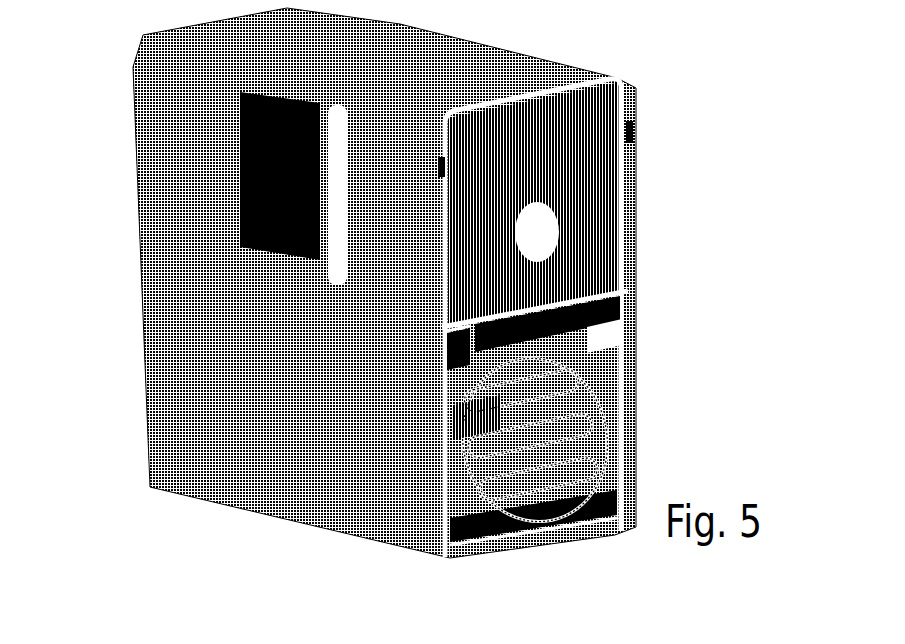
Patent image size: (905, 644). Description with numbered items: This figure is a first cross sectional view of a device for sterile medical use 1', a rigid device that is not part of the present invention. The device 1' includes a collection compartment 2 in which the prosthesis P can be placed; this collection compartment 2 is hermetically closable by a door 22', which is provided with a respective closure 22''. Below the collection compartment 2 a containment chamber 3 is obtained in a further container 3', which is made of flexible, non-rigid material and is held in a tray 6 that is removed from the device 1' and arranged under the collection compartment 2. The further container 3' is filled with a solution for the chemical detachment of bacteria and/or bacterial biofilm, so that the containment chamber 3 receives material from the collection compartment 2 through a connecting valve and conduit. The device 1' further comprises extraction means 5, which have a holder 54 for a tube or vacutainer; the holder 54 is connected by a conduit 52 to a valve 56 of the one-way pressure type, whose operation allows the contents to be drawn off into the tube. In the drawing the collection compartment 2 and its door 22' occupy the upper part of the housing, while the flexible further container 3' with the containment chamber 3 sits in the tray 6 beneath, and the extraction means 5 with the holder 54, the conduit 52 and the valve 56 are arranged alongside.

The device for sterile medical use 1' is at (333, 283).
The door 22' is at (375, 63).
The closure 22'' is at (198, 176).
The tray 6 is at (292, 475).
The collection compartment 2 is at (534, 204).
The prosthesis P is at (538, 238).
The valve 56 is at (472, 318).
The containment chamber 3 is at (582, 324).
The further container 3' is at (646, 361).
The extraction means 5 is at (618, 432).
The holder 54 is at (482, 418).
The conduit 52 is at (588, 495).